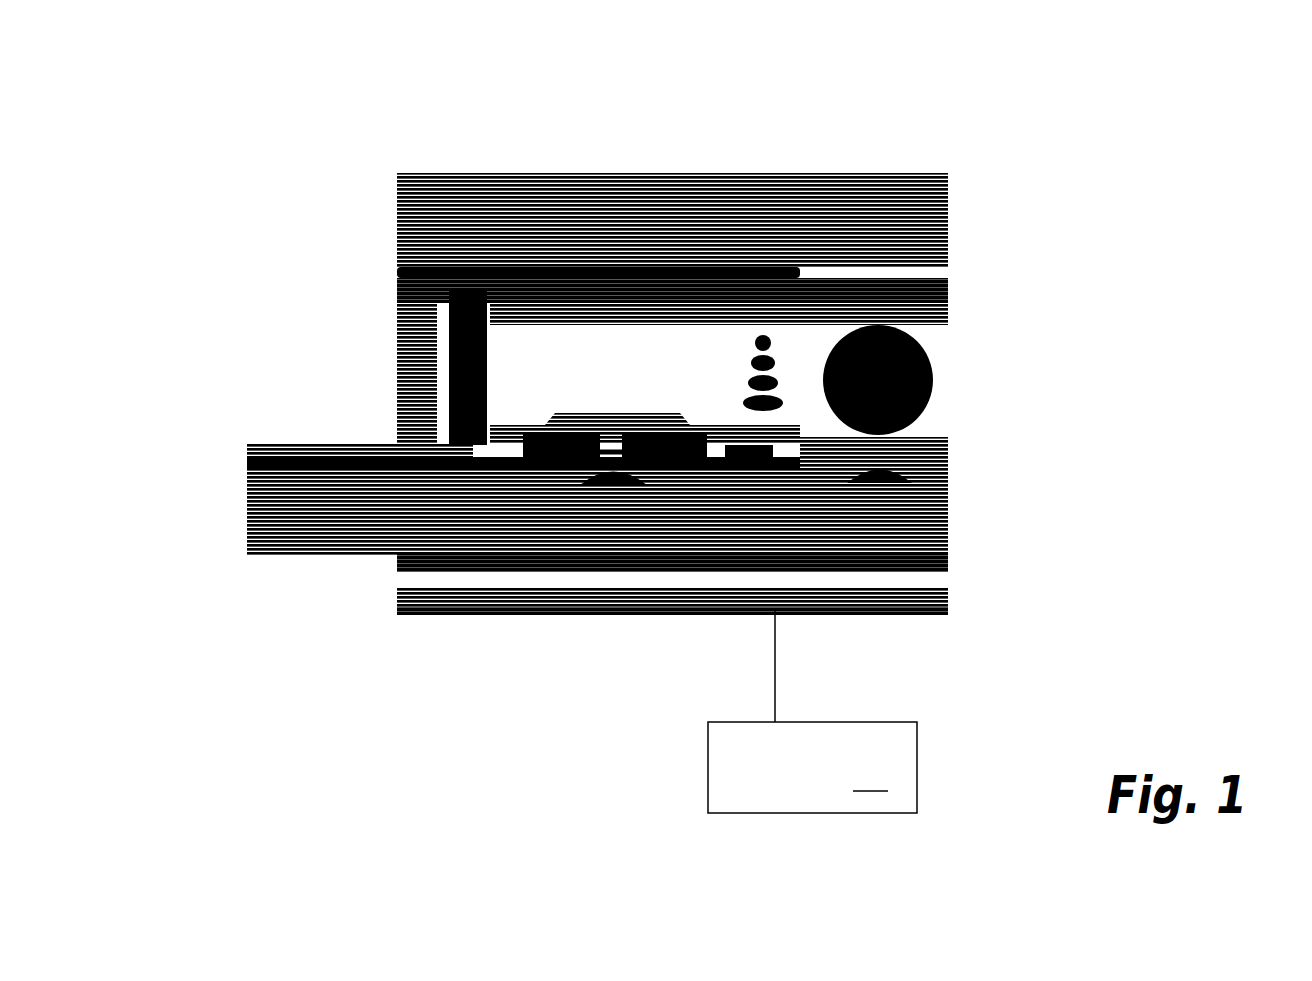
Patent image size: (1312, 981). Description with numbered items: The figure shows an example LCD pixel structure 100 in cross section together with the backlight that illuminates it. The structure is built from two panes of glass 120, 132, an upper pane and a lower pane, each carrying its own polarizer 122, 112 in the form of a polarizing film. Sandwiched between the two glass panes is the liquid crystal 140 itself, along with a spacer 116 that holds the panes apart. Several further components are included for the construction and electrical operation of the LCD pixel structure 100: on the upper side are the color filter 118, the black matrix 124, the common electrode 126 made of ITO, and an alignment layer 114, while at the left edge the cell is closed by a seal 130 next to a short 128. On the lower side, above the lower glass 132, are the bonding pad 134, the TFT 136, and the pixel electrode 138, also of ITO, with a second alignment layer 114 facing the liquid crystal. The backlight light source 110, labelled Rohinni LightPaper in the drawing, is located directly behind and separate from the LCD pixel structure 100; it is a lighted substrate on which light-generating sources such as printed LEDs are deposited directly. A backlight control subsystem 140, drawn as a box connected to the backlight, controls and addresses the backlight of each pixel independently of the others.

The LCD pixel structure 100 is at (1165, 80).
The backlight light source 110 is at (910, 603).
The polarizer 112 is at (910, 565).
The alignment layer 114 is at (928, 318).
The spacer 116 is at (875, 358).
The color filter 118 is at (910, 290).
The glass 120 is at (908, 222).
The polarizer 122 is at (818, 183).
The black matrix 124 is at (592, 270).
The common electrode 126 is at (503, 310).
The short 128 is at (418, 323).
The seal 130 is at (458, 388).
The glass 132 is at (297, 515).
The bonding pad 134 is at (470, 477).
The TFT 136 is at (615, 483).
The pixel electrode 138 is at (792, 463).
The liquid crystal 140 is at (722, 574).